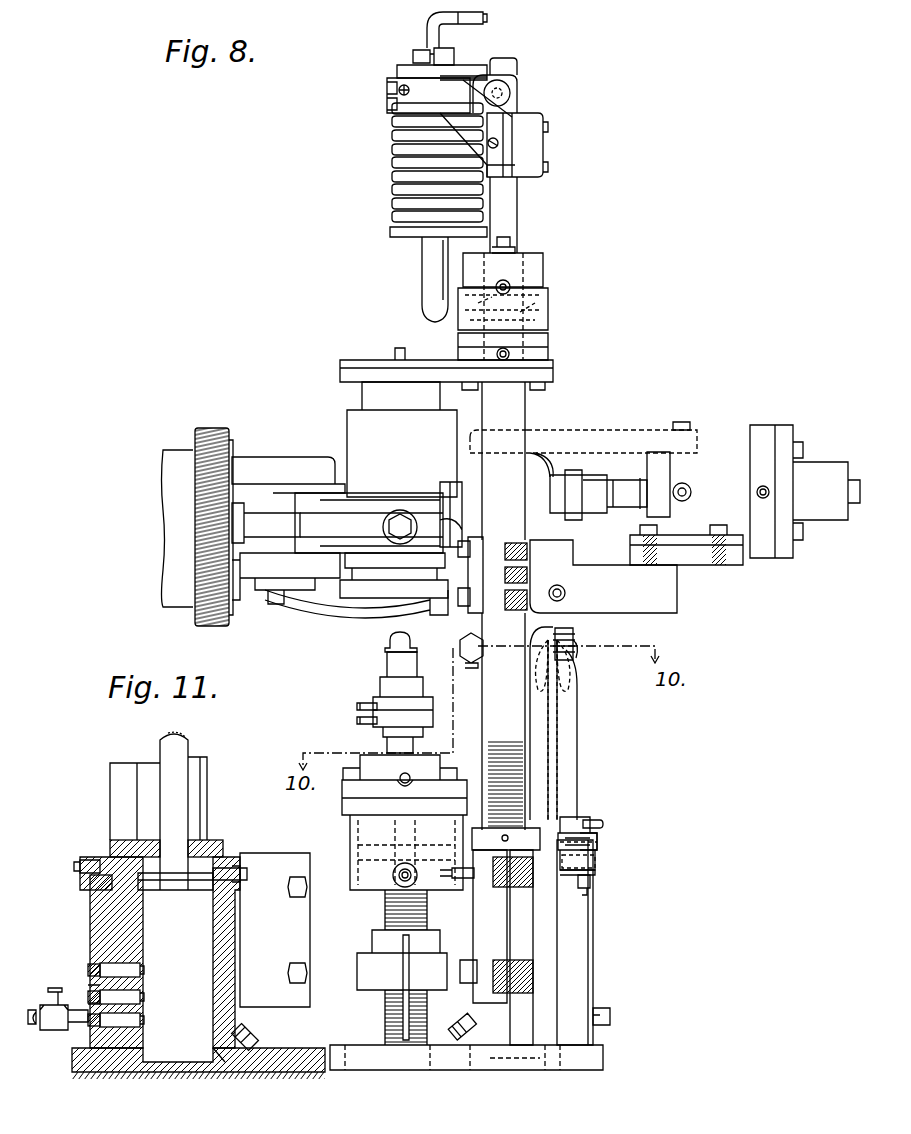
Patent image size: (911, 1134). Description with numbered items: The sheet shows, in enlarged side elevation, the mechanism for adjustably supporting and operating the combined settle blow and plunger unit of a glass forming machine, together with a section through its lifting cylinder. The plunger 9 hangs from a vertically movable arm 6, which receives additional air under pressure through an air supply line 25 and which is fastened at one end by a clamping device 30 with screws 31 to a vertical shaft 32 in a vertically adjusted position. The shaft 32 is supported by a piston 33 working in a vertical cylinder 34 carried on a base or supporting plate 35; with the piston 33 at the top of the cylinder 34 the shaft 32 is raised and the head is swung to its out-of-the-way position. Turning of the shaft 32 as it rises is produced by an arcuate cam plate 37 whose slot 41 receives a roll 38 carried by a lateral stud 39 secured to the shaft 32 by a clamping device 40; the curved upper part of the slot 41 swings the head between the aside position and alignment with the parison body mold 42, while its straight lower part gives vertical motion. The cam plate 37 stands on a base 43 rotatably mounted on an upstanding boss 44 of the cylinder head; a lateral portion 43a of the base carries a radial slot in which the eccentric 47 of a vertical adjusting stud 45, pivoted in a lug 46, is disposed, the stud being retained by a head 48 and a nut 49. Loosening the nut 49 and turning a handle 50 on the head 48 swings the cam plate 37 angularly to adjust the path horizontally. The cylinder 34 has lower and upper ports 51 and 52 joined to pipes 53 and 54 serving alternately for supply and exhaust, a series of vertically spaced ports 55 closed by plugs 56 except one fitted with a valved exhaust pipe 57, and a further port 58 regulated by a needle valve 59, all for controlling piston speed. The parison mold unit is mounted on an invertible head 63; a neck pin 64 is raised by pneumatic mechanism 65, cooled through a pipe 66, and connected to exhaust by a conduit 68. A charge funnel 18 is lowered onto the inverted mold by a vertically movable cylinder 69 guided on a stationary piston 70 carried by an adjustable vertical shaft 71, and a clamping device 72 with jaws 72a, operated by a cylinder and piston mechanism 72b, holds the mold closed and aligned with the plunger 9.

In FIG. 8, the vertically movable arm 6 is at (463, 118).
In FIG. 8, the plunger 9 is at (427, 243).
In FIG. 8, the charge guide or funnel 18 is at (370, 392).
In FIG. 8, the air supply line 25 is at (399, 89).
In FIG. 8, the clamping device 30 is at (515, 113).
In FIG. 8, the screws 31 is at (498, 143).
In FIG. 8, the vertical shaft 32 is at (512, 195).
In FIG. 11, the vertical shaft 32 is at (183, 745).
In FIG. 11, the piston 33 is at (170, 882).
In FIG. 8, the vertical cylinder 34 is at (475, 1012).
In FIG. 11, the vertical cylinder 34 is at (100, 928).
In FIG. 11, the base or supporting plate 35 is at (163, 1073).
In FIG. 8, the cam plate 37 is at (575, 745).
In FIG. 11, the cam plate 37 is at (117, 772).
In FIG. 8, the cam roll 38 is at (572, 634).
In FIG. 8, the lateral arm or stud 39 is at (572, 652).
In FIG. 8, the clamping device 40 is at (468, 640).
In FIG. 8, the slot 41 is at (570, 713).
In FIG. 8, the parison body mold 42 is at (365, 432).
In FIG. 11, the cam plate base 43 is at (207, 848).
In FIG. 8, the laterally extending portion 43a is at (605, 832).
In FIG. 11, the axial upstanding boss 44 is at (158, 845).
In FIG. 8, the vertical adjusting stud 45 is at (597, 860).
In FIG. 8, the lug 46 is at (593, 873).
In FIG. 8, the eccentric adjusting portion 47 is at (597, 843).
In FIG. 8, the head 48 is at (573, 820).
In FIG. 8, the nut 49 is at (580, 882).
In FIG. 8, the handle 50 is at (600, 825).
In FIG. 11, the port 51 is at (222, 1064).
In FIG. 11, the port 52 is at (225, 865).
In FIG. 8, the pipe 53 is at (460, 1035).
In FIG. 11, the pipe 53 is at (257, 1035).
In FIG. 8, the pipe 54 is at (458, 880).
In FIG. 11, the pipe 54 is at (240, 874).
In FIG. 11, the vertically spaced ports 55 is at (140, 970).
In FIG. 11, the plugs 56 is at (90, 996).
In FIG. 8, the valved pipe 57 is at (605, 1015).
In FIG. 11, the valved pipe 57 is at (80, 1020).
In FIG. 11, the port 58 is at (85, 905).
In FIG. 11, the needle valve 59 is at (110, 860).
In FIG. 8, the head 63 is at (163, 578).
In FIG. 8, the neck pin 64 is at (392, 640).
In FIG. 8, the pneumatic mechanism 65 is at (349, 887).
In FIG. 8, the pipe 66 is at (357, 720).
In FIG. 8, the conduit 68 is at (375, 705).
In FIG. 8, the vertically movable cylinder 69 is at (548, 338).
In FIG. 8, the stationary piston 70 is at (548, 318).
In FIG. 8, the longitudinally adjustable vertical shaft 71 is at (520, 395).
In FIG. 8, the clamping device 72 is at (565, 466).
In FIG. 8, the jaw 72a is at (455, 470).
In FIG. 8, the cylinder and piston mechanism 72b is at (635, 455).